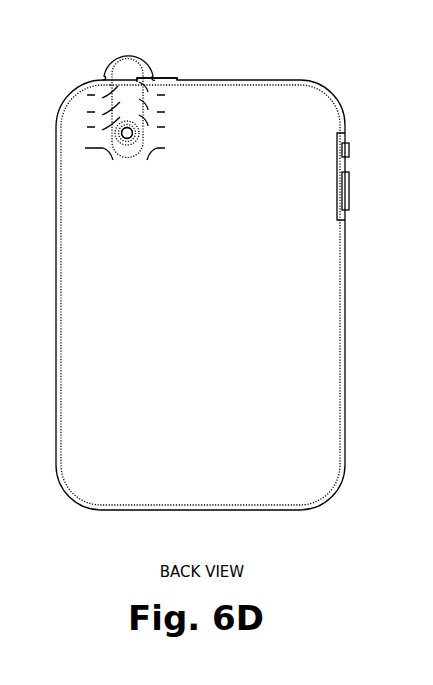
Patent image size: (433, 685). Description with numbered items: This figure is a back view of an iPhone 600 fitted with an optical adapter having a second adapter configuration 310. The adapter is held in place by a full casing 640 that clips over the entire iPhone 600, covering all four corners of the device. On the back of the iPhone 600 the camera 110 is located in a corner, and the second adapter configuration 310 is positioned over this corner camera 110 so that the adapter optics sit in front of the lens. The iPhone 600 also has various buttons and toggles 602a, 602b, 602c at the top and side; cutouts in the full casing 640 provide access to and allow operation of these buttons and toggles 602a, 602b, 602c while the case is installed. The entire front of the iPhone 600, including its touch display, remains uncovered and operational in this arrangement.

The iPhone 600 is at (342, 292).
The full casing 640 is at (105, 74).
The second adapter configuration 310 is at (153, 52).
The camera 110 is at (118, 143).
The button/toggle 602a is at (157, 82).
The button/toggle 602b is at (350, 152).
The button/toggle 602c is at (350, 187).